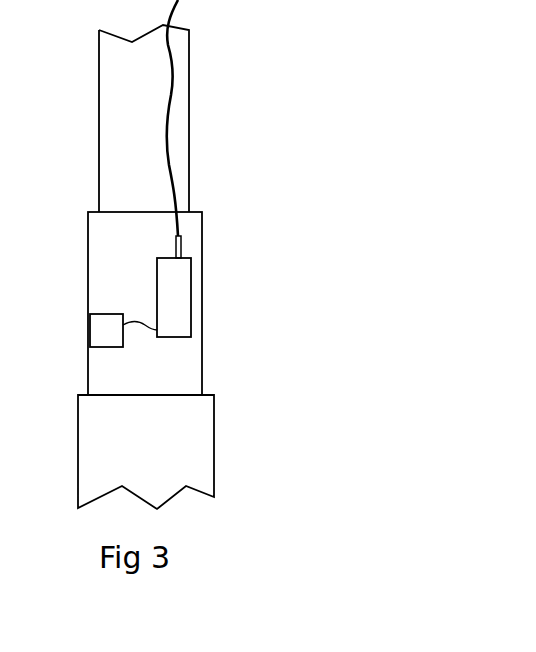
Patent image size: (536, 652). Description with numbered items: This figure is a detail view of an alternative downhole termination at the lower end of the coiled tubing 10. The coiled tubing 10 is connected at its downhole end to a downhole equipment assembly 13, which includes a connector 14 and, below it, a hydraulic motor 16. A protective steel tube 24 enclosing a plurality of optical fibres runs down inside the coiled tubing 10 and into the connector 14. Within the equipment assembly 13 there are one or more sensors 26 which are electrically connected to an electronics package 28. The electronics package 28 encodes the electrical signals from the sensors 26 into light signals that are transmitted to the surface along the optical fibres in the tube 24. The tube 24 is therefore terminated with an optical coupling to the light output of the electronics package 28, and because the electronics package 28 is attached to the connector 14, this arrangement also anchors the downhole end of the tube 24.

The coiled tubing 10 is at (189, 150).
The downhole equipment assembly 13 is at (80, 257).
The connector 14 is at (202, 224).
The hydraulic motor 16 is at (204, 423).
The protective steel tube 24 is at (172, 88).
The sensors 26 is at (107, 329).
The electronics package 28 is at (183, 296).